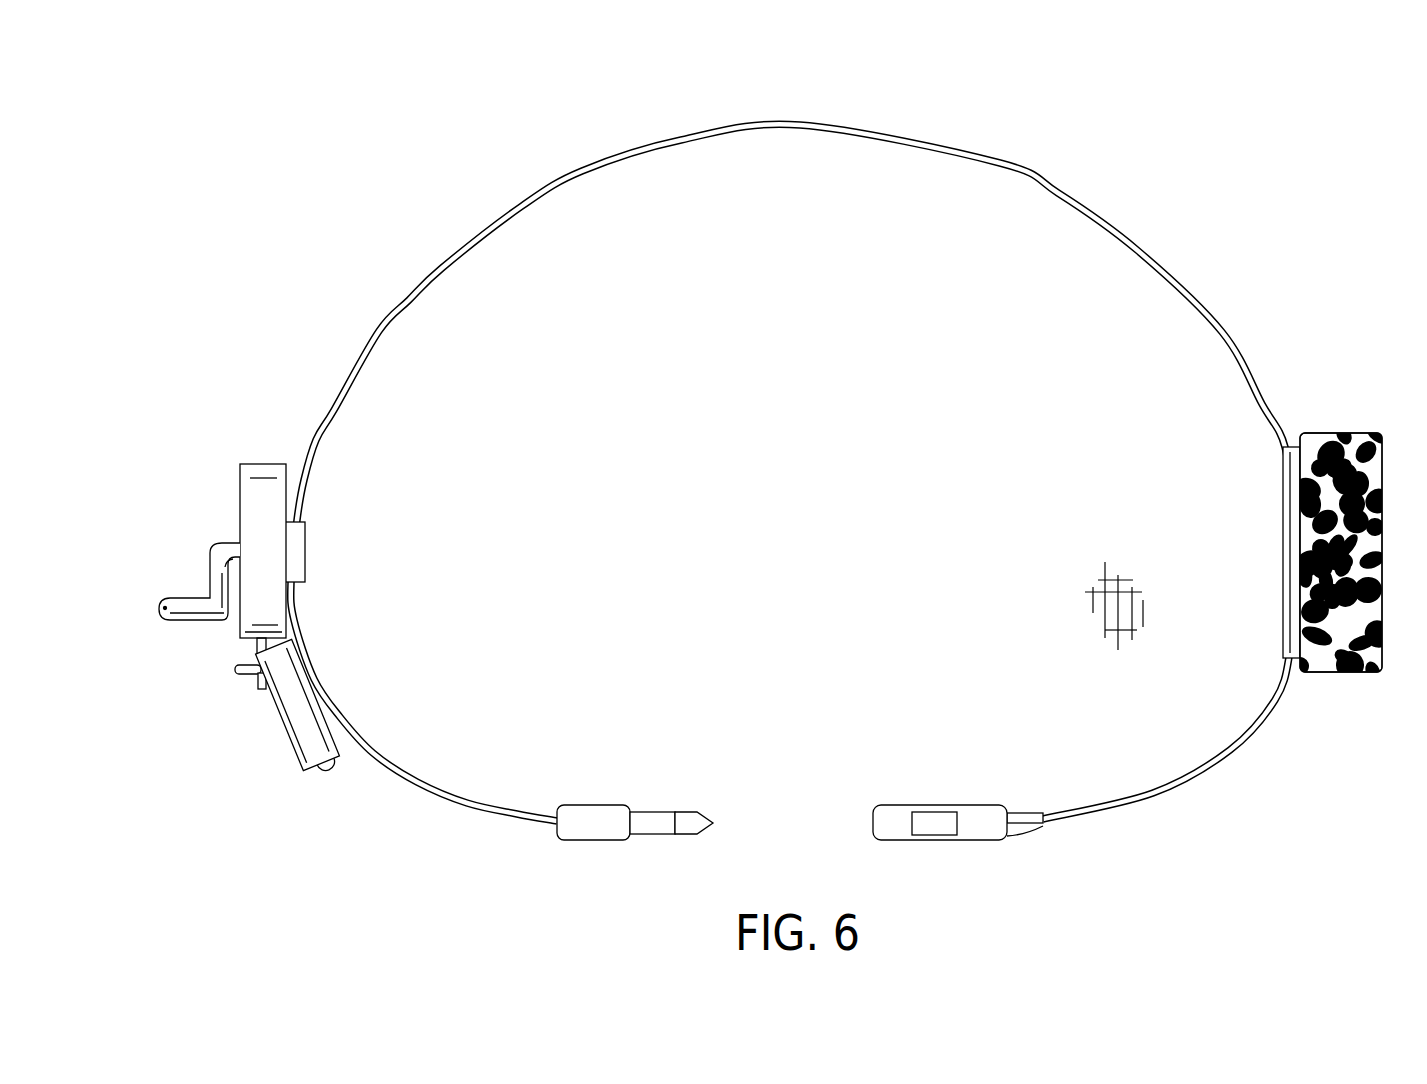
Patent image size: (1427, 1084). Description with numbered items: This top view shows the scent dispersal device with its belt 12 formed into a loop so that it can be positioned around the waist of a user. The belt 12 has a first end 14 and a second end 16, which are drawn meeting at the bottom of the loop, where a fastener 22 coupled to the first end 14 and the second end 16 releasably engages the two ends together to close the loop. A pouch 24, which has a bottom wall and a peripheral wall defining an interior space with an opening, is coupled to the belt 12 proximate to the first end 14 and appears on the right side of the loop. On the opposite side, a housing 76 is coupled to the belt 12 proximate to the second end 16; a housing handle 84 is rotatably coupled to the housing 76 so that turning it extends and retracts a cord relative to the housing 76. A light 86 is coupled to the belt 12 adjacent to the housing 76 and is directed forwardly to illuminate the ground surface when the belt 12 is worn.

The belt 12 is at (803, 122).
The first end 14 is at (1022, 772).
The second end 16 is at (545, 780).
The fastener 22 is at (887, 822).
The pouch 24 is at (1380, 448).
The housing 76 is at (265, 473).
The housing handle 84 is at (160, 611).
The light 86 is at (290, 730).